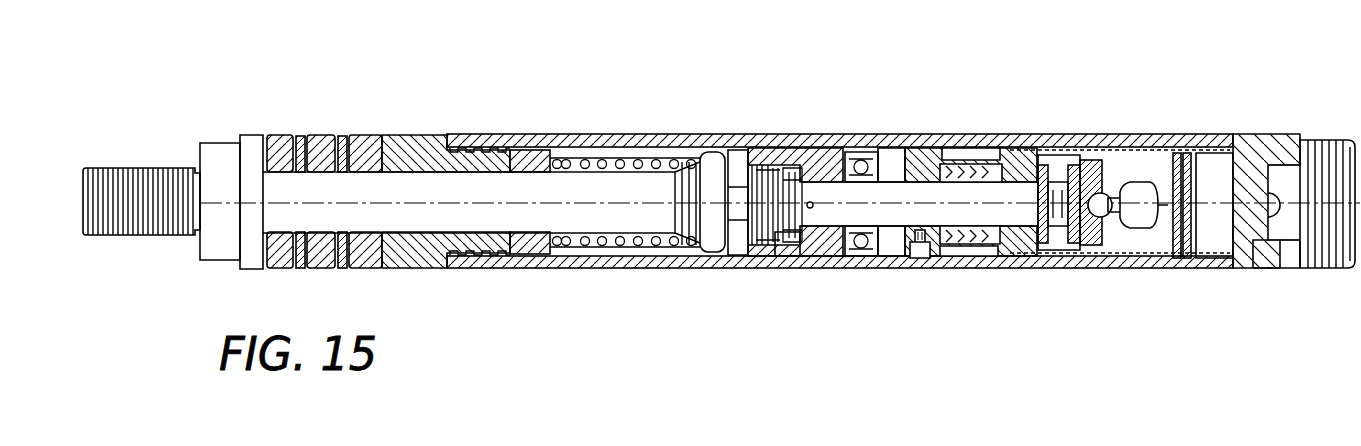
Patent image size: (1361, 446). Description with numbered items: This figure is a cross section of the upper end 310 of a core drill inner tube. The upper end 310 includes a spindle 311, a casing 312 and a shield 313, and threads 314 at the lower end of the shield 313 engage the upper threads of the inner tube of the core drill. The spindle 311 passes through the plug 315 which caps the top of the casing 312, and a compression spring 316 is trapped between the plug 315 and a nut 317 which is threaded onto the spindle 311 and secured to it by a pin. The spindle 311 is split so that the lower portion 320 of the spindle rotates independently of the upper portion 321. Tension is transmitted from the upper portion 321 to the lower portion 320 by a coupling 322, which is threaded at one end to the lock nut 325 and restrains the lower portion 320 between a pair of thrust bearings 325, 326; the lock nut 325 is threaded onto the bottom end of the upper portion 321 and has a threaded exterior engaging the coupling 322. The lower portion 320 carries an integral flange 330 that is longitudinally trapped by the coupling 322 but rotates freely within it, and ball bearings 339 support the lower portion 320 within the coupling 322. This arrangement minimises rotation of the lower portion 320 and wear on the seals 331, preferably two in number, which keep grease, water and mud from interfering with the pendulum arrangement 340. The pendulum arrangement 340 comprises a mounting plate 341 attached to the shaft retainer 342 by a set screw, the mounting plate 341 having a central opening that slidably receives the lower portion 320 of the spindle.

The damper assembly 310 is at (712, 108).
The spindle 311 is at (408, 185).
The casing 312 is at (788, 136).
The shield 313 is at (1180, 137).
The threads 314 is at (1331, 140).
The plug 315 is at (432, 262).
The compression spring 316 is at (617, 265).
The nut 317 is at (712, 254).
The lower portion of the spindle 320 is at (930, 184).
The upper portion of the spindle 321 is at (355, 225).
The coupling 322 is at (836, 258).
The lock nut 325 is at (784, 165).
The thrust bearing 326 is at (814, 168).
The integral flange 330 is at (794, 258).
The seals 331 is at (977, 262).
The ball bearings 339 is at (867, 258).
The pendulum arrangement 340 is at (1173, 278).
The mounting plate 341 is at (1024, 258).
The shaft retainer 342 is at (988, 152).